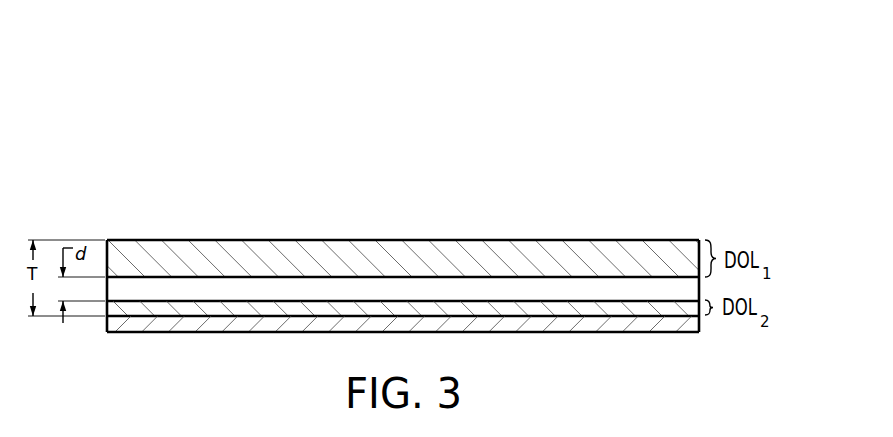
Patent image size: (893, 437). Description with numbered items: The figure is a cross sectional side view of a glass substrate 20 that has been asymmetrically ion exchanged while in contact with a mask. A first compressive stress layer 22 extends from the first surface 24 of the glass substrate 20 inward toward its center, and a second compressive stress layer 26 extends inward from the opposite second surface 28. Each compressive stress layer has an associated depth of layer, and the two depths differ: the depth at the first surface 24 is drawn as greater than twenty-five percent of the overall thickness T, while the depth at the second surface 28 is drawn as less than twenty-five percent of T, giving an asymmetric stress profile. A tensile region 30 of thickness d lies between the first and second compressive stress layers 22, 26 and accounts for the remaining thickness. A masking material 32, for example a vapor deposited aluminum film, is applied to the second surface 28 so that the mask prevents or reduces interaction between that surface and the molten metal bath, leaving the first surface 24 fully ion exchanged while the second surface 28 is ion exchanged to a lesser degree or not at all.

The glass substrate 20 is at (406, 271).
The first compressive stress layer 22 is at (210, 248).
The first surface 24 is at (346, 238).
The second compressive stress layer 26 is at (240, 310).
The second surface 28 is at (186, 318).
The tensile region 30 is at (603, 290).
The masking material 32 is at (587, 333).